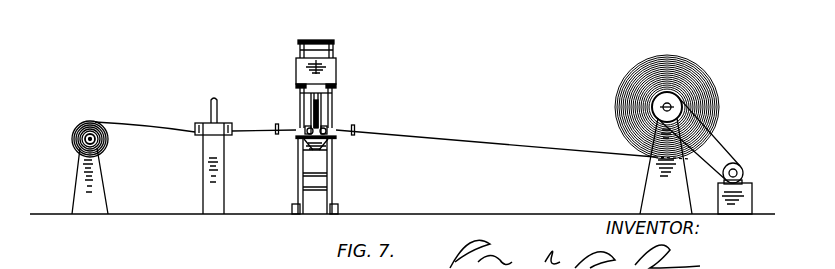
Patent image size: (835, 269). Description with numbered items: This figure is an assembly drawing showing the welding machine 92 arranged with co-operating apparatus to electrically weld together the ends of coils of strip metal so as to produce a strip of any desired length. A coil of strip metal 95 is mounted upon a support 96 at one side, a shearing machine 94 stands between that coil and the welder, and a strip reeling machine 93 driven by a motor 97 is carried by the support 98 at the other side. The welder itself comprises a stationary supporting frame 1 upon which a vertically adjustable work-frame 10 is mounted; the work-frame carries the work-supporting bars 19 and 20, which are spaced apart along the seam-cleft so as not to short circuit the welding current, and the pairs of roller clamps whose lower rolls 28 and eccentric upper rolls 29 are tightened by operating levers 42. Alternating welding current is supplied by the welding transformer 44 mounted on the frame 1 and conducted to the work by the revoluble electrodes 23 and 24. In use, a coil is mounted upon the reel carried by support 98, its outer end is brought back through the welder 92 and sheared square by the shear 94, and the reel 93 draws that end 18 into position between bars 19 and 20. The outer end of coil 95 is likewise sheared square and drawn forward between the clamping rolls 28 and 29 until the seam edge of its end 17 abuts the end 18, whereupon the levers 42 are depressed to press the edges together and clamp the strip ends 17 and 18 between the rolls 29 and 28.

The supporting frame 1 is at (333, 182).
The work-frame 10 is at (336, 143).
The strip end 17 is at (270, 128).
The strip end 18 is at (373, 132).
The work-supporting bar 19 is at (306, 142).
The work-supporting bar 20 is at (322, 143).
The electrode 23 is at (301, 124).
The electrode 24 is at (330, 124).
The roll 28 is at (300, 136).
The roll 29 is at (309, 122).
The operating lever 42 is at (298, 125).
The welding transformer 44 is at (313, 62).
The welding machine 92 is at (317, 38).
The strip reeling machine 93 is at (670, 62).
The shearing machine 94 is at (215, 98).
The coil of strip metal 95 is at (91, 121).
The support 96 is at (104, 178).
The motor 97 is at (738, 165).
The support 98 is at (650, 164).